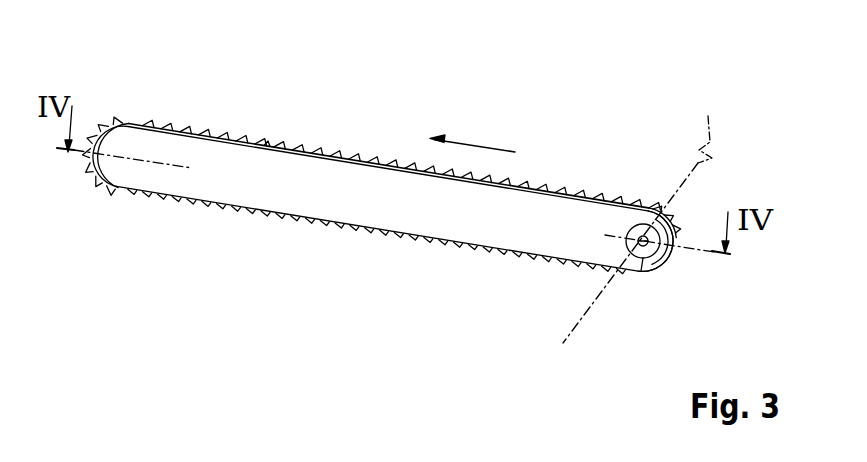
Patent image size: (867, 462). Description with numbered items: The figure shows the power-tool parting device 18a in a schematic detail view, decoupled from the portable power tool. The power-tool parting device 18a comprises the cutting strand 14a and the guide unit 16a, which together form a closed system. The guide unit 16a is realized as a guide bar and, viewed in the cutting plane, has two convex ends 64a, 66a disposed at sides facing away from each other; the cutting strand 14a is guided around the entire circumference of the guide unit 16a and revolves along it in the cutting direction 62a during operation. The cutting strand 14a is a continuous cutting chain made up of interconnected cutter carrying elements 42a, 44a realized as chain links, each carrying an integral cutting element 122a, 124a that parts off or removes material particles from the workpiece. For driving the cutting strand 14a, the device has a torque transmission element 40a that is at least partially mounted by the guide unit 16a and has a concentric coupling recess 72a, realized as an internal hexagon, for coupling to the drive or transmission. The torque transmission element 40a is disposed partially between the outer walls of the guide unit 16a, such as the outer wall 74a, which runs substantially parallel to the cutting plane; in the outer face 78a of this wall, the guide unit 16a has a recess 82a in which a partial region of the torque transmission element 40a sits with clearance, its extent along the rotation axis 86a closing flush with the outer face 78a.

The power-tool parting device 18a is at (622, 95).
The cutting strand 14a is at (173, 130).
The guide unit 16a is at (217, 192).
The cutter carrying element 42a is at (228, 139).
The cutting element 122a is at (237, 141).
The cutter carrying element 44a is at (245, 141).
The cutting element 124a is at (251, 142).
The cutting direction 62a is at (480, 146).
The convex end 64a is at (91, 191).
The convex end 66a is at (686, 278).
The coupling recess 72a is at (642, 221).
The outer wall 74a is at (315, 197).
The outer face 78a is at (457, 218).
The torque transmission element 40a is at (639, 259).
The recess 82a is at (660, 263).
The rotation axis 86a is at (643, 215).